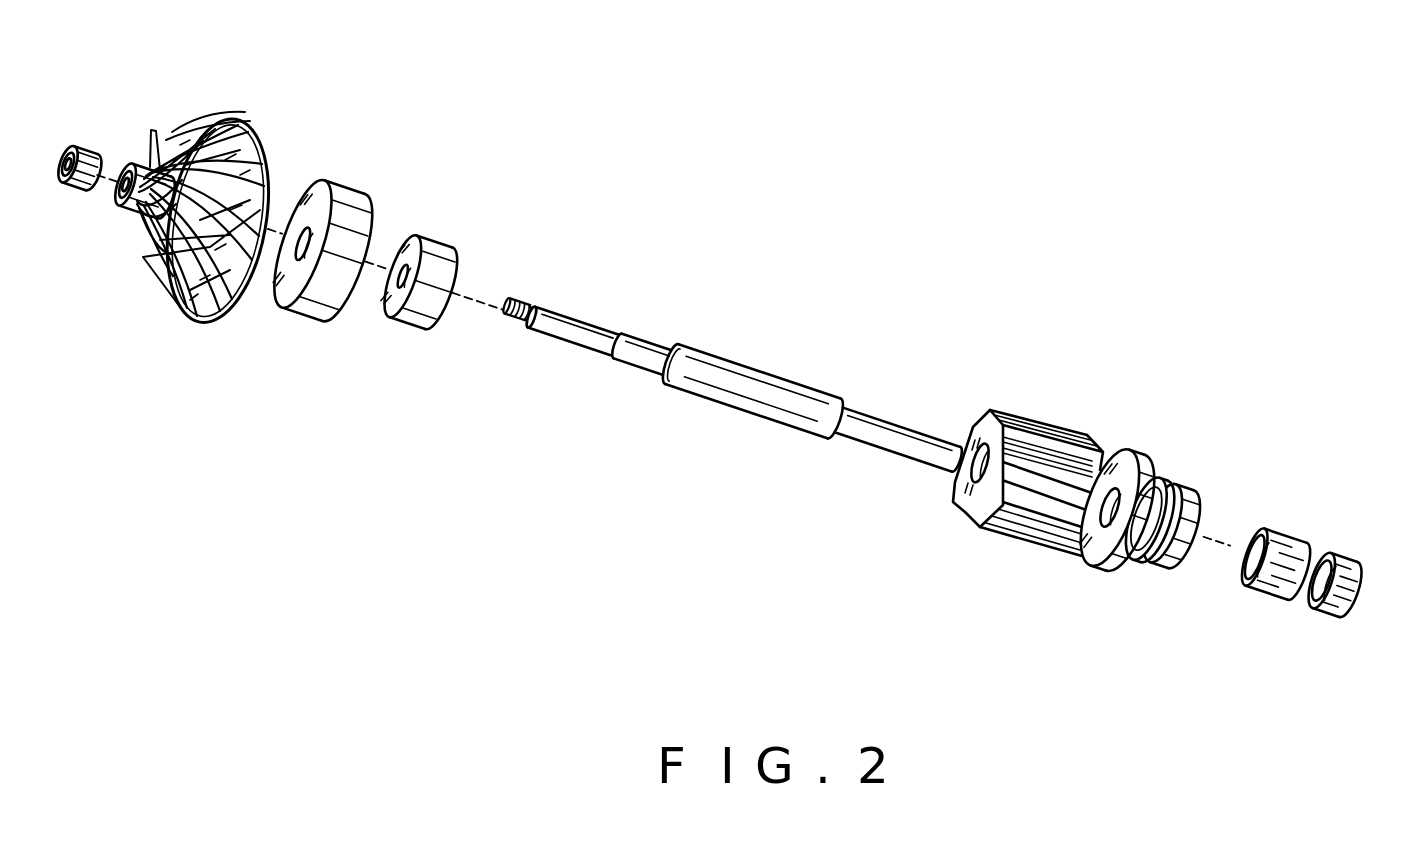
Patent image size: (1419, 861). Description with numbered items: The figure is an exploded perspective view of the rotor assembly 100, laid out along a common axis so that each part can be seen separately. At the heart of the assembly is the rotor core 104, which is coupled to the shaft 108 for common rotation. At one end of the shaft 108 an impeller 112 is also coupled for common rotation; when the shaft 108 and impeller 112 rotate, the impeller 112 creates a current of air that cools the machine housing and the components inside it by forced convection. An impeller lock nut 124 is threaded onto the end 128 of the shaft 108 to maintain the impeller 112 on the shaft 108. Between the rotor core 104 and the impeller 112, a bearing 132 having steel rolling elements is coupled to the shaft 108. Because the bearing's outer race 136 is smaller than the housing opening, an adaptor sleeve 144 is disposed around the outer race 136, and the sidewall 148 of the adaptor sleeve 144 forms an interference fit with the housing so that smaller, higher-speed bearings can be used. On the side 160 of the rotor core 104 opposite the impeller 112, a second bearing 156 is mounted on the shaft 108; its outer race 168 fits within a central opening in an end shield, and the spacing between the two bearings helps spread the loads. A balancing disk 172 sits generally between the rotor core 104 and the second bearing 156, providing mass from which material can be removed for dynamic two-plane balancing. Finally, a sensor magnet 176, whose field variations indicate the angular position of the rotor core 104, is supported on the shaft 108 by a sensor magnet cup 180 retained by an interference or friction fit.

The rotor assembly 100 is at (1150, 225).
The rotor core 104 is at (1021, 541).
The shaft 108 is at (723, 408).
The impeller 112 is at (171, 318).
The impeller lock nut 124 is at (70, 186).
The end of the shaft 128 is at (513, 324).
The bearing 132 is at (407, 328).
The outer race 136 is at (427, 234).
The adaptor sleeve 144 is at (295, 314).
The sidewall 148 is at (338, 182).
The second bearing 156 is at (1148, 568).
The side of the rotor core 160 is at (1088, 443).
The outer race 168 is at (1163, 481).
The balancing disk 172 is at (1103, 568).
The sensor magnet 176 is at (1327, 614).
The sensor magnet cup 180 is at (1263, 591).